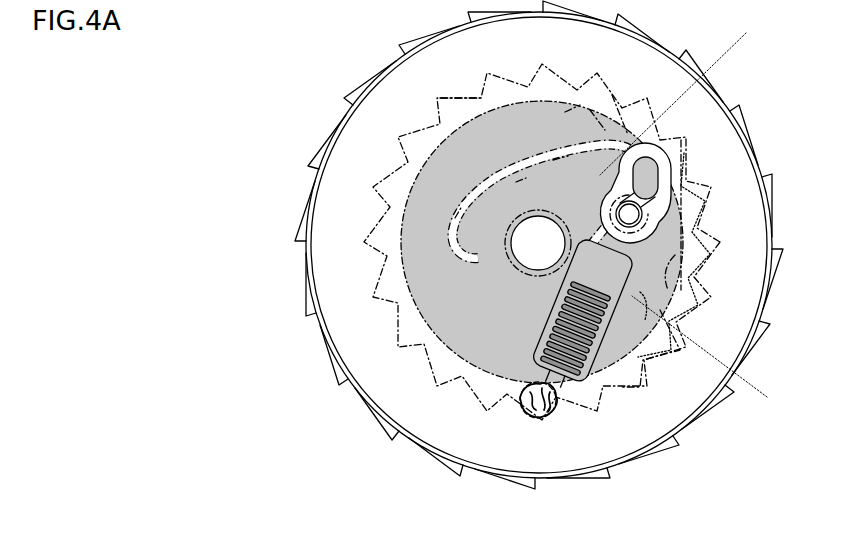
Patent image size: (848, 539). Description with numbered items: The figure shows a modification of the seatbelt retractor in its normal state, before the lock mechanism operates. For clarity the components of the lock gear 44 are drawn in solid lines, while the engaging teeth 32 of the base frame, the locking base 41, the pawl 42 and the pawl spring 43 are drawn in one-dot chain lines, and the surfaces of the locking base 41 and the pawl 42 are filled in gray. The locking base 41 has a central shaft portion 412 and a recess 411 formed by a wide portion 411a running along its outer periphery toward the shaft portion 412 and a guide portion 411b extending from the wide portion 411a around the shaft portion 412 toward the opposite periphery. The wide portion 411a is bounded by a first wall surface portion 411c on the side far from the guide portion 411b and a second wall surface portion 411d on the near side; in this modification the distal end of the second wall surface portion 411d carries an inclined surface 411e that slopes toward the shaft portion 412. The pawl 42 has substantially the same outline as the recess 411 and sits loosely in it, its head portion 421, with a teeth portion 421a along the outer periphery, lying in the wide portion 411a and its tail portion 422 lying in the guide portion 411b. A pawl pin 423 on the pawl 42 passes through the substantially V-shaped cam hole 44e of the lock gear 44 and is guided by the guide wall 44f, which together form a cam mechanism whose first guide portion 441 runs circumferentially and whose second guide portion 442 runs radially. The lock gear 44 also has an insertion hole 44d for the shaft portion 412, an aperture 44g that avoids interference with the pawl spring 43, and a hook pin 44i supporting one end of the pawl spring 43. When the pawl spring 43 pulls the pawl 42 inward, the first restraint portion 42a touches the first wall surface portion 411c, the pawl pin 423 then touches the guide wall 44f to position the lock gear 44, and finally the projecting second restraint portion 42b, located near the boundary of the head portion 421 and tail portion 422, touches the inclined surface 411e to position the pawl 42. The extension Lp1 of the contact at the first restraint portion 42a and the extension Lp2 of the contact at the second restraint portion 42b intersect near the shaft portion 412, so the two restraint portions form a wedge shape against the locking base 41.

The lock gear 44 is at (311, 109).
The engaging teeth 32 is at (463, 97).
The locking base 41 is at (508, 99).
The recess 411 is at (683, 220).
The wide portion 411a is at (561, 142).
The guide portion 411b is at (468, 194).
The first wall surface portion 411c is at (645, 302).
The second wall surface portion 411d is at (573, 110).
The inclined surface 411e is at (598, 112).
The shaft portion 412 is at (538, 243).
The pawl 42 is at (519, 188).
The first restraint portion 42a is at (662, 292).
The second restraint portion 42b is at (630, 135).
The head portion 421 is at (542, 242).
The teeth portion 421a is at (690, 263).
The tail portion 422 is at (546, 217).
The pawl pin 423 is at (608, 224).
The pawl spring 43 is at (548, 312).
The insertion hole 44d is at (527, 267).
The cam hole 44e is at (646, 165).
The guide wall 44f is at (668, 143).
The aperture 44g is at (543, 332).
The hook pin 44i is at (540, 418).
The first guide portion 441 is at (682, 165).
The second guide portion 442 is at (677, 279).
The extension Lp1 is at (713, 355).
The extension Lp2 is at (687, 100).